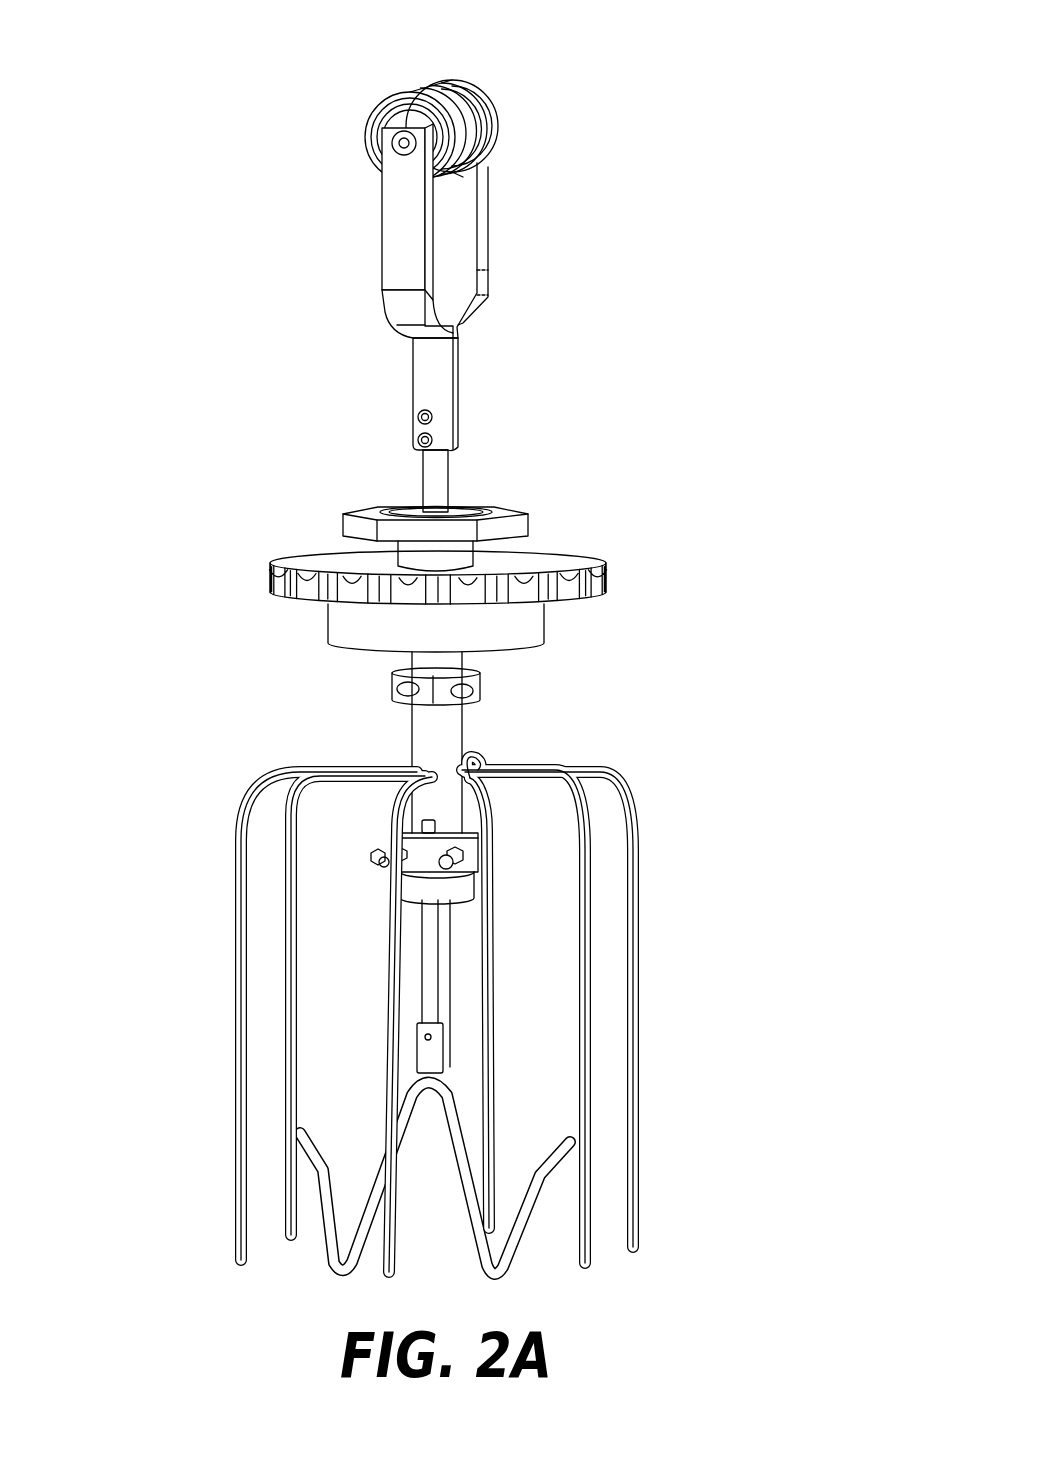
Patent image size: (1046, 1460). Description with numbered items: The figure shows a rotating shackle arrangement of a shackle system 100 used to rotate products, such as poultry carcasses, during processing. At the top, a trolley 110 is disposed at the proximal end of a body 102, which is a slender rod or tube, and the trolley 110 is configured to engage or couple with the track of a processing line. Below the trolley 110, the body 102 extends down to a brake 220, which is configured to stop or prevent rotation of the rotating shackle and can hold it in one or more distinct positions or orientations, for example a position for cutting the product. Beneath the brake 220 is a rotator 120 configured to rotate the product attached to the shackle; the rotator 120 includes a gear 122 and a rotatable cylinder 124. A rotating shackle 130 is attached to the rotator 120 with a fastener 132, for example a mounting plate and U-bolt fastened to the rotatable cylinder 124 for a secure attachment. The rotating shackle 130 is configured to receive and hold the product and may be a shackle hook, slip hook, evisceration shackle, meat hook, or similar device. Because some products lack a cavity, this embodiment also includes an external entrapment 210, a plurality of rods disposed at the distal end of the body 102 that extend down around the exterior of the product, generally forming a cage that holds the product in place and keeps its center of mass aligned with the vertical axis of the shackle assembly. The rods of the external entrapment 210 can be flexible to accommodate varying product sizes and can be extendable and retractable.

The shackle system 100 is at (300, 36).
The trolley 110 is at (409, 80).
The body 102 is at (420, 477).
The brake 220 is at (528, 528).
The rotator 120 is at (277, 548).
The gear 122 is at (293, 595).
The rotatable cylinder 124 is at (410, 735).
The fastener 132 is at (477, 860).
The rotating shackle 130 is at (500, 1272).
The external entrapment 210 is at (638, 1017).